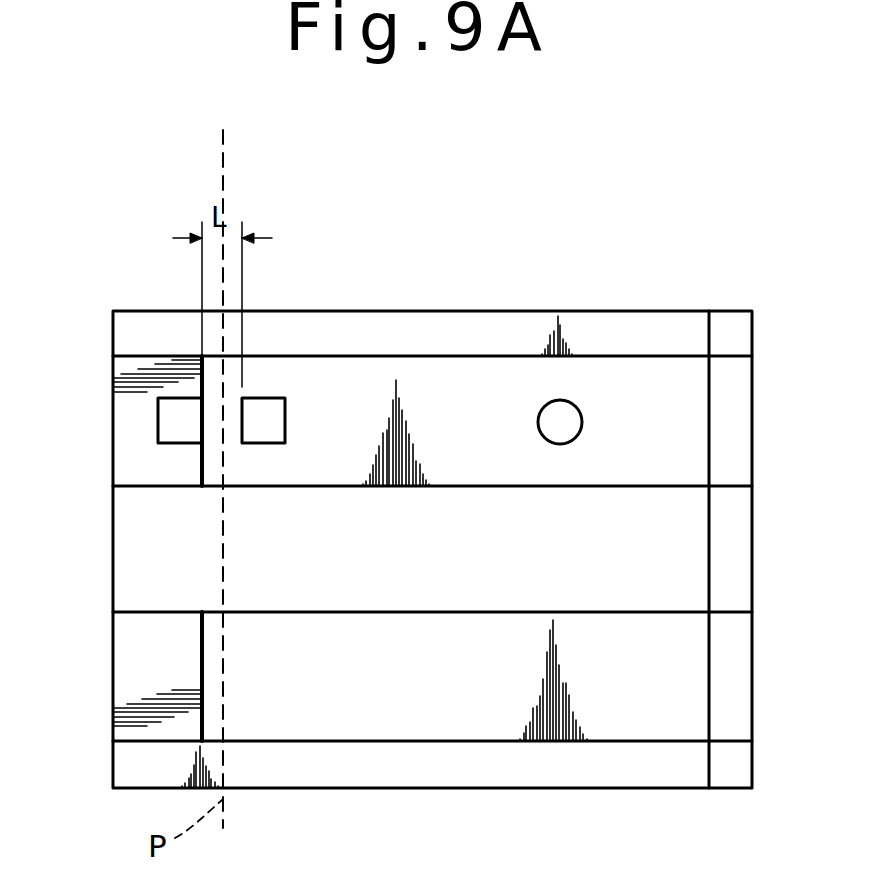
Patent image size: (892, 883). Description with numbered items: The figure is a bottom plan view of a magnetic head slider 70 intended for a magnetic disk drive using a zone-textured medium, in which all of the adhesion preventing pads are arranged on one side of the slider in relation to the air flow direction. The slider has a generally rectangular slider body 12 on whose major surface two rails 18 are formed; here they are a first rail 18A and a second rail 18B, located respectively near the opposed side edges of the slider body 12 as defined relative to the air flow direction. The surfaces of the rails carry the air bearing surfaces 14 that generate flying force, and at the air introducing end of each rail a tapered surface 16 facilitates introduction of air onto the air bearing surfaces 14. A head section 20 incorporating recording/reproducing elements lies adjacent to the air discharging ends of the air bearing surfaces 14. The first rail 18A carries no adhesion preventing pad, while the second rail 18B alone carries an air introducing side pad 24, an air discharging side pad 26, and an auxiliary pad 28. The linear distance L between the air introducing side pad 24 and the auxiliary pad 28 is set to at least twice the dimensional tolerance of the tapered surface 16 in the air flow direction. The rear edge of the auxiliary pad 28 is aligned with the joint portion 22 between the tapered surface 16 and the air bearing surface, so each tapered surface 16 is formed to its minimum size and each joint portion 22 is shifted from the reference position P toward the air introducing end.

The magnetic head slider 70 is at (480, 232).
The slider body 12 is at (520, 311).
The air bearing surfaces 14 is at (318, 400).
The tapered surfaces 16 is at (133, 468).
The rails 18 is at (672, 487).
The first rail 18A is at (430, 745).
The second rail 18B is at (435, 356).
The head section 20 is at (737, 412).
The joint portion 22 is at (200, 633).
The air introducing side pad 24 is at (264, 410).
The air discharging side pad 26 is at (562, 413).
The auxiliary pad 28 is at (168, 420).